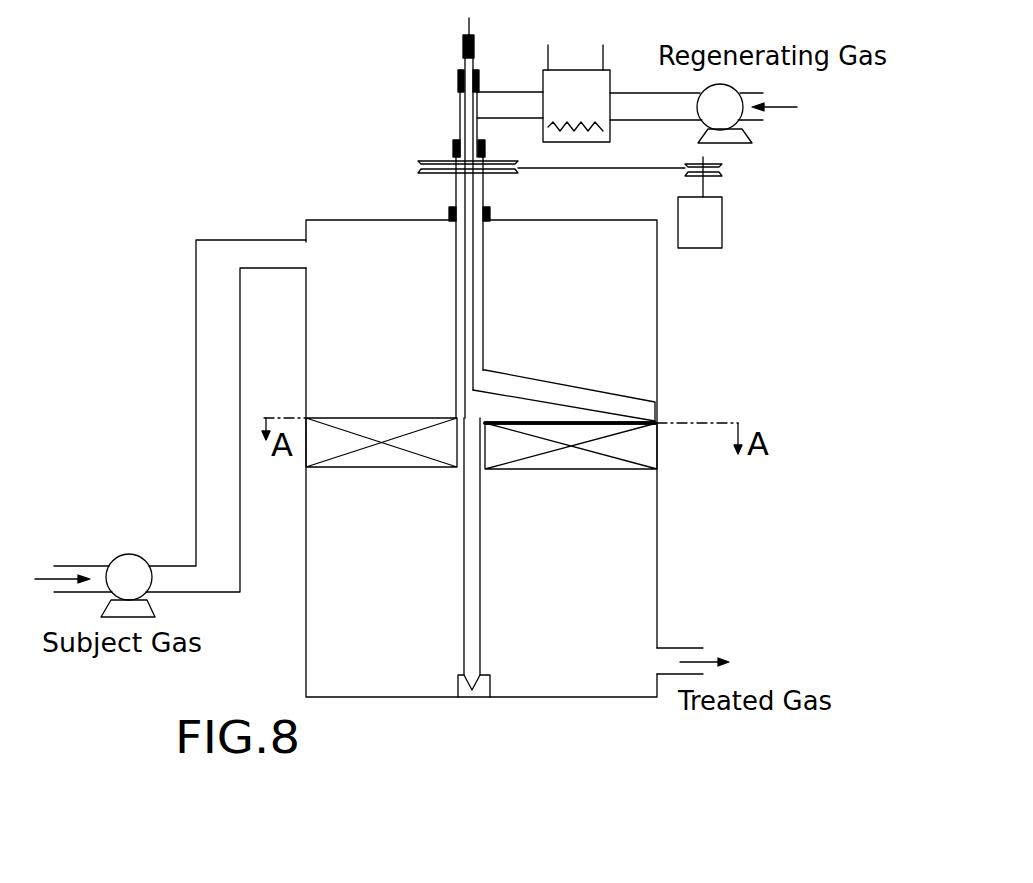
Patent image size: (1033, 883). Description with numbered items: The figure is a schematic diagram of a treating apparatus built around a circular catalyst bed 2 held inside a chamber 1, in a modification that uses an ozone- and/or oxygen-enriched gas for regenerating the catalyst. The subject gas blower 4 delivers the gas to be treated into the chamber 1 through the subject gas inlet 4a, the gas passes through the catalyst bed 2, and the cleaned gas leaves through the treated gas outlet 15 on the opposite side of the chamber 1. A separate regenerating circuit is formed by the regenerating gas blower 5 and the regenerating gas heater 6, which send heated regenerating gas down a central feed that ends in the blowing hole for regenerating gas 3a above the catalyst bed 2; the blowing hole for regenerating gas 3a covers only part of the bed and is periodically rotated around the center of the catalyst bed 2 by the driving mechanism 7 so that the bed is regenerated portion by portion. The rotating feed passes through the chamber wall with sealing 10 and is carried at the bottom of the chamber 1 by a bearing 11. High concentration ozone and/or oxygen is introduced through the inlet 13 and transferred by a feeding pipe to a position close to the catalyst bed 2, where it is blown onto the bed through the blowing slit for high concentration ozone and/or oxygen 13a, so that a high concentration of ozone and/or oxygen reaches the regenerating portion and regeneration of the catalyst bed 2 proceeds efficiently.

The chamber 1 is at (658, 555).
The catalyst bed 2 is at (635, 450).
The blowing hole for regenerating gas 3a is at (595, 388).
The subject gas blower 4 is at (129, 555).
The subject gas inlet 4a is at (305, 240).
The regenerating gas blower 5 is at (703, 118).
The regenerating gas heater 6 is at (543, 83).
The driving mechanism 7 is at (723, 220).
The sealing 10 is at (458, 145).
The bearing 11 is at (467, 695).
The inlet of high concentration ozone and/or oxygen 13 is at (468, 25).
The blowing slit for high concentration ozone and/or oxygen 13a is at (587, 415).
The treated gas outlet 15 is at (657, 673).